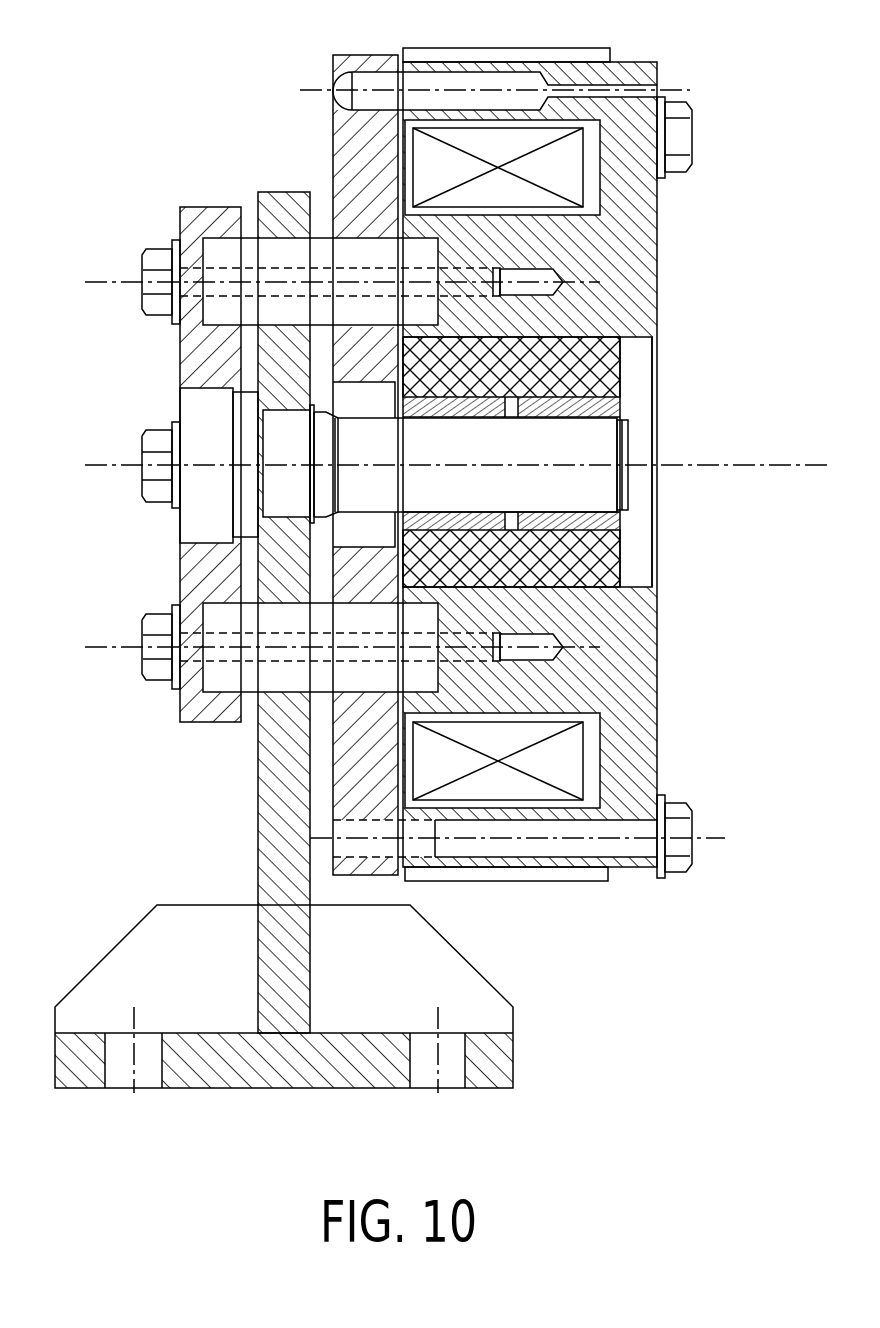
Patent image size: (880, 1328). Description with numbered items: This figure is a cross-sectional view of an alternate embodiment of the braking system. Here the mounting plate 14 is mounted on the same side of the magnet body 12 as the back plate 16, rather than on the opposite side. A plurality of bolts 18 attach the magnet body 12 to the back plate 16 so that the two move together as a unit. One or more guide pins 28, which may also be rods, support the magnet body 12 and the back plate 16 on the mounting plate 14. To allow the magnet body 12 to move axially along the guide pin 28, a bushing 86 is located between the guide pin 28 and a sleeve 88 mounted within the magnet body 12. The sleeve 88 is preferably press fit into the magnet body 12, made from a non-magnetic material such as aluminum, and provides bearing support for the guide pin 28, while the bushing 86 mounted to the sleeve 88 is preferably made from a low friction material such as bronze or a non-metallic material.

The magnet body 12 is at (658, 70).
The mounting plate 14 is at (258, 818).
The back plate 16 is at (186, 722).
The bolts 18 is at (140, 282).
The guide pin 28 is at (633, 472).
The bushing 86 is at (553, 567).
The sleeve 88 is at (633, 383).